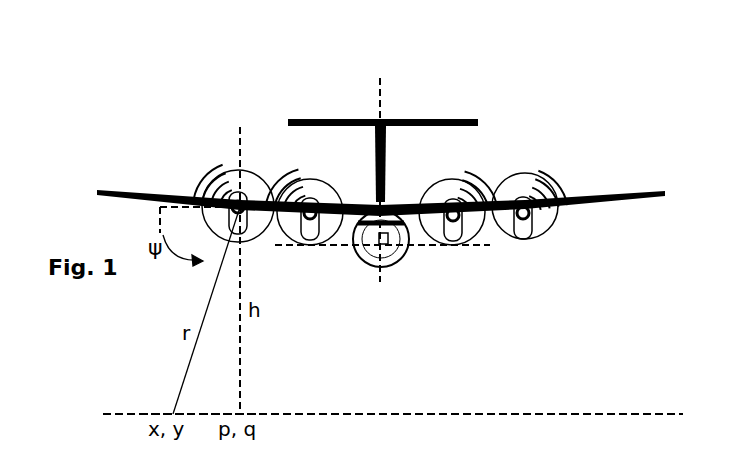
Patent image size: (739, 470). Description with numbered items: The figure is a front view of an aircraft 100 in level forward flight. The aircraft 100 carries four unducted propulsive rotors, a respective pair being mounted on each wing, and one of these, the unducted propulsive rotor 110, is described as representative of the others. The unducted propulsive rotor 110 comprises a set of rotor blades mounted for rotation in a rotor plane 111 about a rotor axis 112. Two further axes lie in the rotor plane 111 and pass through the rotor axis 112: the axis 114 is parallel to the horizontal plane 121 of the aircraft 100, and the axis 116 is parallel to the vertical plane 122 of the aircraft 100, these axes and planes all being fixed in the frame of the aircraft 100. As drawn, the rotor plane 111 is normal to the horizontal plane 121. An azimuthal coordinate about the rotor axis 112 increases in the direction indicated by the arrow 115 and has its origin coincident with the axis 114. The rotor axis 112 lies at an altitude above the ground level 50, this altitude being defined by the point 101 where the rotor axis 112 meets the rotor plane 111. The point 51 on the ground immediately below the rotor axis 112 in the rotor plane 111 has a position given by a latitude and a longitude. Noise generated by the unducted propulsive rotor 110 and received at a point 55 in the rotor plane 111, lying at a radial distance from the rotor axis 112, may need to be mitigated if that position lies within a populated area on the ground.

The aircraft 100 is at (603, 147).
The point 101 is at (238, 190).
The unducted propulsive rotor 110 is at (238, 197).
The rotor plane 111 is at (250, 187).
The rotor axis 112 is at (225, 210).
The axis 114 is at (305, 247).
The arrow 115 is at (163, 232).
The axis 116 is at (238, 130).
The horizontal plane 121 is at (468, 248).
The vertical plane 122 is at (382, 90).
The ground level 50 is at (598, 413).
The point 51 is at (233, 413).
The point 55 is at (150, 413).